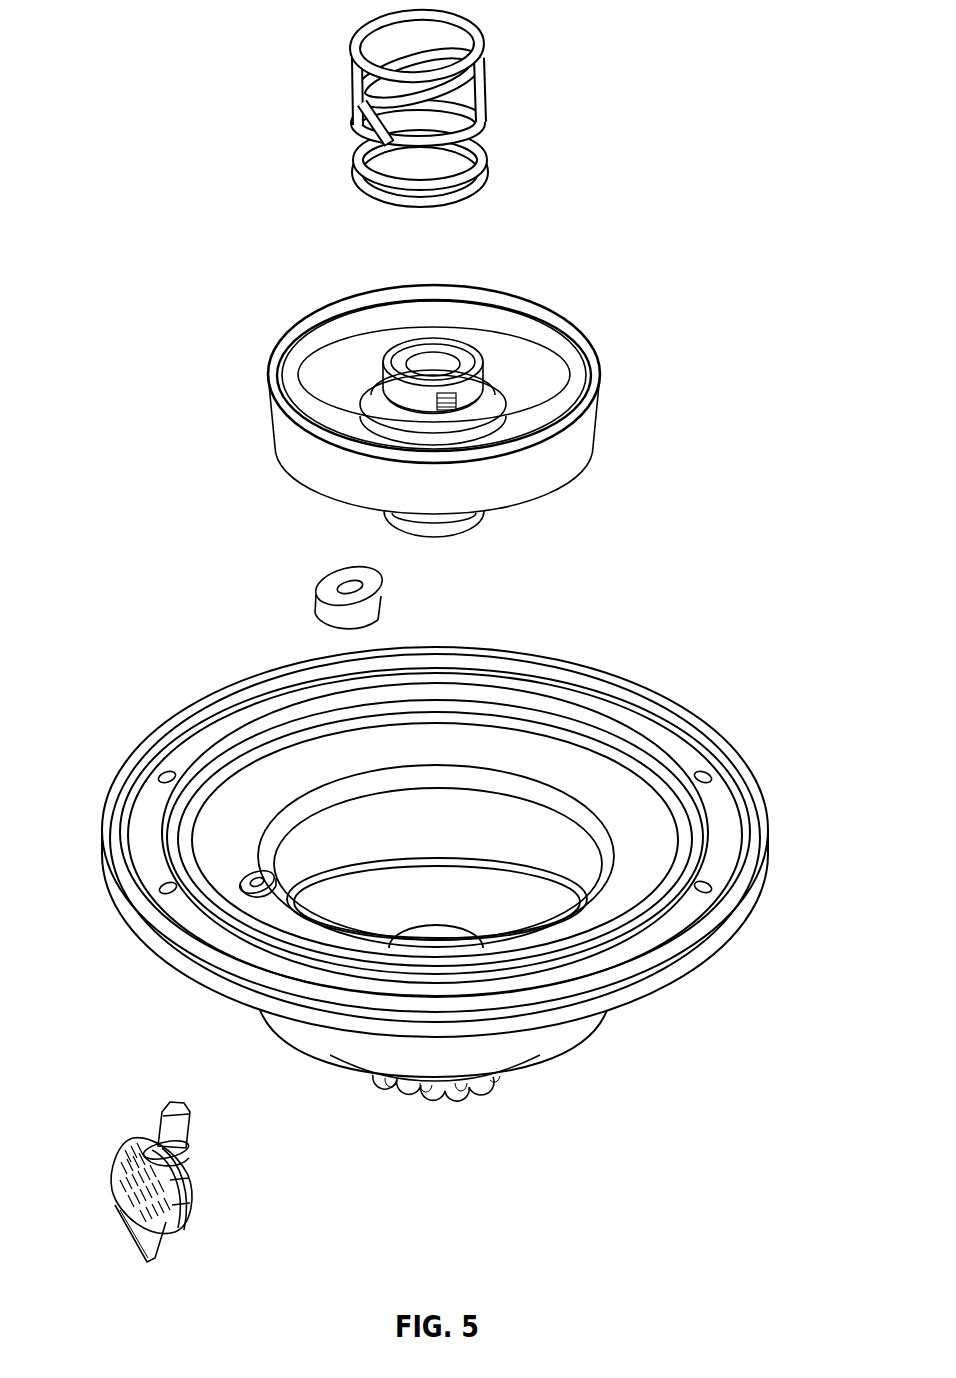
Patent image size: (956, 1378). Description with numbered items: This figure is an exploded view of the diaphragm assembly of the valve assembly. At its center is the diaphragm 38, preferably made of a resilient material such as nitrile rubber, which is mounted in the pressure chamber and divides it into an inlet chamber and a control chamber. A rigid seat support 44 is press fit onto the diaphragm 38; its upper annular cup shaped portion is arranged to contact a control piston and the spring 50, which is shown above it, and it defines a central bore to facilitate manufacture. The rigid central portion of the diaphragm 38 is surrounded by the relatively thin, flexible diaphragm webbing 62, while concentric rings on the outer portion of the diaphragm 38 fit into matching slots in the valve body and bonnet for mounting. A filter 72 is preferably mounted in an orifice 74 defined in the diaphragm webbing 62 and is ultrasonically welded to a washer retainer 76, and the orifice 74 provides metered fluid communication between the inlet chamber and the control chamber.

The diaphragm 38 is at (732, 747).
The seat support 44 is at (590, 418).
The spring 50 is at (480, 127).
The diaphragm webbing 62 is at (602, 792).
The filter 72 is at (195, 1203).
The orifice 74 is at (252, 875).
The washer retainer 76 is at (315, 593).